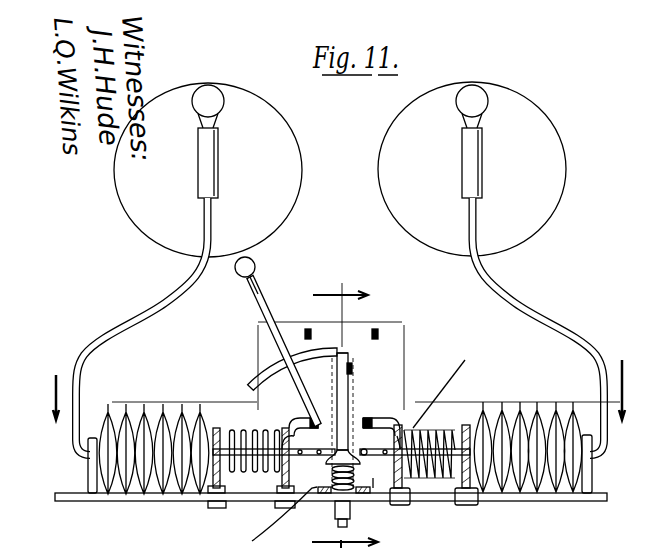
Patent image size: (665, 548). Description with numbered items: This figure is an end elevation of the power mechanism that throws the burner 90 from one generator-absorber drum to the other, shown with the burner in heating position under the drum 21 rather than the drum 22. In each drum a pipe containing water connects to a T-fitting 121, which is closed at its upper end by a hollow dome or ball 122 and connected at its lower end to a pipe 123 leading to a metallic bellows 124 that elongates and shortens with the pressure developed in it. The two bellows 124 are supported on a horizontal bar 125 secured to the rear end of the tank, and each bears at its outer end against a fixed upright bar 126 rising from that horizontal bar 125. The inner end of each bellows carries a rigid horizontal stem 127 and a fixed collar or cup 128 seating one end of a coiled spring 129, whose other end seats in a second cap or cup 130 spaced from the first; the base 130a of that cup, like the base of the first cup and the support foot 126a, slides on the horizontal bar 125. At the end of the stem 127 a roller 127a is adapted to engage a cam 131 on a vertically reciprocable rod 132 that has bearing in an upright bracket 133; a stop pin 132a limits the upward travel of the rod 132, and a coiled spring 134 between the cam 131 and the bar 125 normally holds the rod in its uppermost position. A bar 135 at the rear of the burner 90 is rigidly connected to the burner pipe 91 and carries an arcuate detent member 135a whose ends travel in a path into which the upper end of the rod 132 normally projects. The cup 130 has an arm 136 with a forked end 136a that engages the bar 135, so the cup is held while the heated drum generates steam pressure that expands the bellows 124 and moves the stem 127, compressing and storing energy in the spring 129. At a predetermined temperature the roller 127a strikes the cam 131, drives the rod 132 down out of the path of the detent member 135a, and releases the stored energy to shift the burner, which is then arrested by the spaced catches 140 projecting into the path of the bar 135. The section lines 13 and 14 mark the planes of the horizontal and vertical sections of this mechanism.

The drum 21 is at (291, 119).
The drum 22 is at (464, 169).
The T-fitting 121 is at (219, 161).
The hollow dome or ball 122 is at (212, 93).
The pipe 123 is at (97, 350).
The metallic bellows 124 is at (158, 490).
The horizontal bar 125 is at (121, 502).
The upright bar 126 is at (88, 475).
The support foot 126a is at (218, 508).
The horizontal stem 127 is at (341, 429).
The roller 127a is at (372, 475).
The collar or cup 128 is at (210, 488).
The coiled spring 129 is at (357, 451).
The cap or cup 130 is at (282, 483).
The base 130a is at (286, 502).
The cam 131 is at (360, 420).
The vertically reciprocable rod 132 is at (350, 393).
The stop pin 132a is at (350, 524).
The upright bracket 133 is at (352, 380).
The coiled spring 134 is at (340, 493).
The bar 135 is at (259, 302).
The arcuate detent member 135a is at (272, 372).
The arm 136 is at (303, 418).
The forked end 136a is at (295, 418).
The reciprocable catches 140 is at (372, 338).
The burner 90 is at (268, 288).
The burner pipe 91 is at (254, 263).
The section line 13— 13 is at (338, 390).
The section line 14— 14 is at (331, 408).